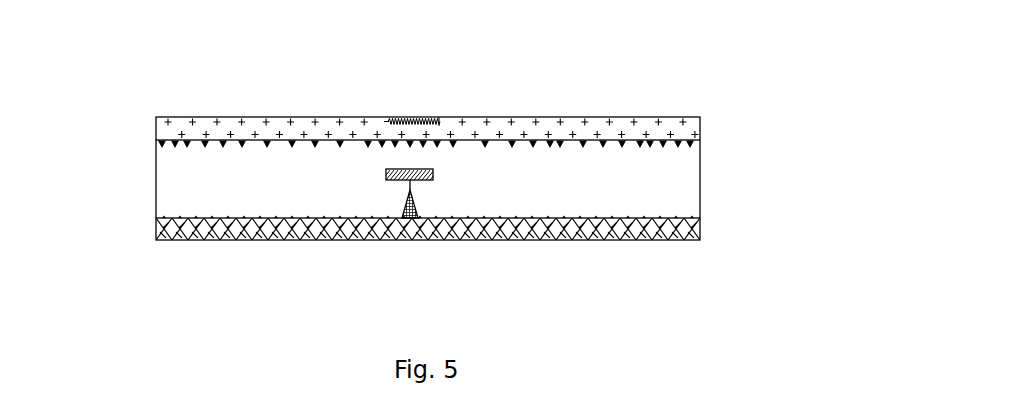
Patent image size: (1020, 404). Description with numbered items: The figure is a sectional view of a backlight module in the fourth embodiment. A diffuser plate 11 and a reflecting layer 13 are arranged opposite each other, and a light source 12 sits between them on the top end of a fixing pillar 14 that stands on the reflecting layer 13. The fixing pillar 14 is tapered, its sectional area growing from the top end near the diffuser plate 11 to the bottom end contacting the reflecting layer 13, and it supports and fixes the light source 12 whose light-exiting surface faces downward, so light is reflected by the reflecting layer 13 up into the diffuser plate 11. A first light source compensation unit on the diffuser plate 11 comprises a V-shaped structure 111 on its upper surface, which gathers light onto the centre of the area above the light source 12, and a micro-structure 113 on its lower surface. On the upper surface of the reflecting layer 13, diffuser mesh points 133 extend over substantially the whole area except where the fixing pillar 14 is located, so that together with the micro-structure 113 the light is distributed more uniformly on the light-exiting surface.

The diffuser plate 11 is at (700, 131).
The V-shaped structure 111 is at (428, 118).
The micro-structure 113 is at (163, 147).
The light source 12 is at (433, 173).
The reflecting layer 13 is at (700, 230).
The diffuser mesh point 133 is at (170, 217).
The fixing pillar 14 is at (410, 215).